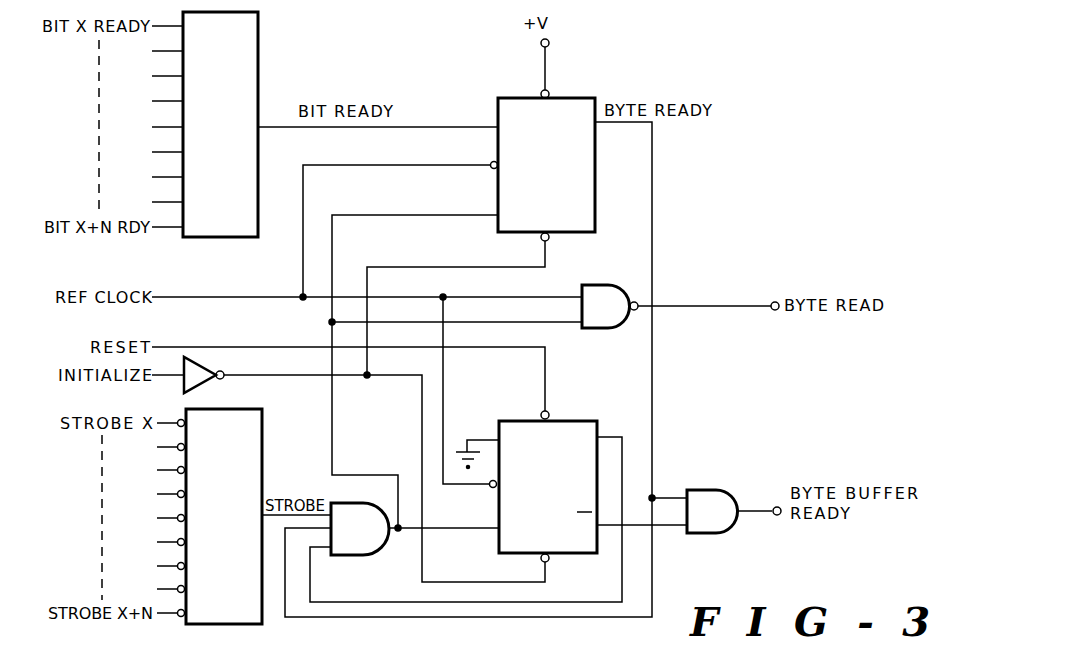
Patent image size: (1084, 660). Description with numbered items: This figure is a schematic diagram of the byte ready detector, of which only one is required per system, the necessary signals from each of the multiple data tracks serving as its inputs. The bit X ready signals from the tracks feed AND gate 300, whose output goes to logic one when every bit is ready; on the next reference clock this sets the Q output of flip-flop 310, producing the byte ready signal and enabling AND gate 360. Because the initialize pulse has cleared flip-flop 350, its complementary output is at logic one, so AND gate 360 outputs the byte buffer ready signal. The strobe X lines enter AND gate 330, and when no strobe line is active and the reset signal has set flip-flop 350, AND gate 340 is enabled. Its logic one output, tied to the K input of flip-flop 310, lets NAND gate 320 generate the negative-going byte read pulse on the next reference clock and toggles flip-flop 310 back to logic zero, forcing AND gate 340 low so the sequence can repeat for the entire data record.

The AND gate 300 is at (258, 30).
The flip-flop 310 is at (578, 98).
The NAND gate 320 is at (630, 345).
The AND gate 330 is at (262, 422).
The AND gate 340 is at (348, 555).
The flip-flop 350 is at (580, 421).
The AND gate 360 is at (694, 490).